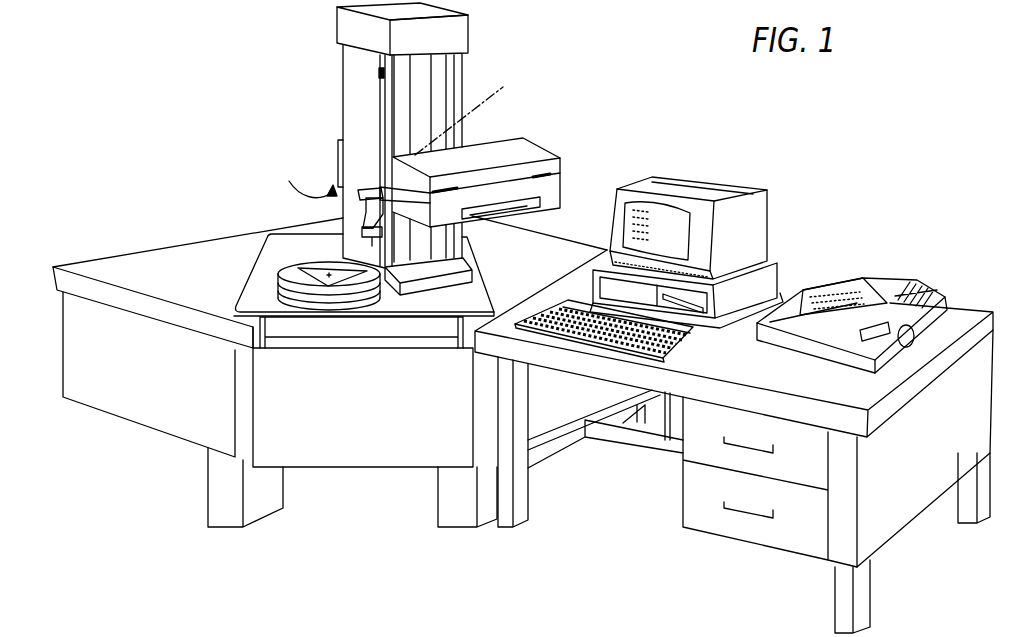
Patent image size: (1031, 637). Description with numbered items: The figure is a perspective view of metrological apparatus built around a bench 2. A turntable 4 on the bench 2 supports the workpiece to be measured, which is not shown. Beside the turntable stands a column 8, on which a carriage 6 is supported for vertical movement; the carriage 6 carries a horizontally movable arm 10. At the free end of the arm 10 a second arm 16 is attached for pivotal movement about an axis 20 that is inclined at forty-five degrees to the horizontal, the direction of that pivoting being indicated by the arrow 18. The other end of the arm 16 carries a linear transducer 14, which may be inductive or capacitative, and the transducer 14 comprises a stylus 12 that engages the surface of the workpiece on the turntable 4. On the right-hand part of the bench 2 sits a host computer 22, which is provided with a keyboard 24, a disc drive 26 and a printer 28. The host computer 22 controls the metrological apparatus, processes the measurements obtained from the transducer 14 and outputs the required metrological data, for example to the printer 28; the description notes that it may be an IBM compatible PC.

The bench 2 is at (100, 264).
The turntable 4 is at (292, 272).
The carriage 6 is at (510, 158).
The column 8 is at (463, 35).
The arm 10 is at (378, 192).
The stylus 12 is at (358, 225).
The linear transducer 14 is at (367, 232).
The arm 16 is at (363, 228).
The arrow 18 is at (300, 180).
The axis 20 is at (478, 104).
The host computer 22 is at (699, 170).
The keyboard 24 is at (677, 343).
The disc drive 26 is at (763, 283).
The printer 28 is at (877, 278).